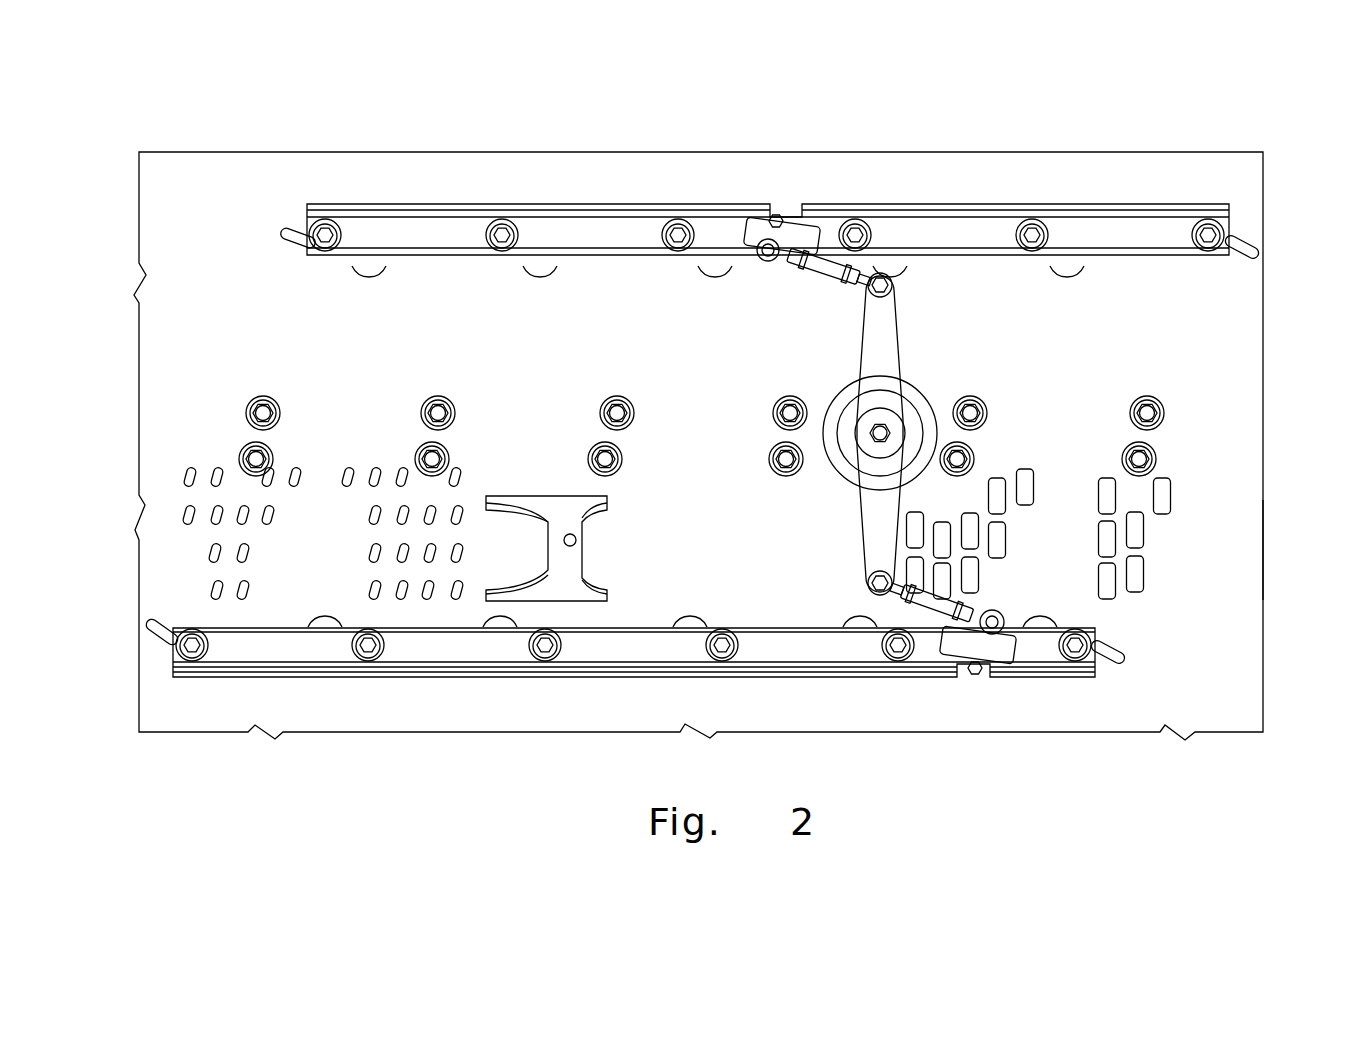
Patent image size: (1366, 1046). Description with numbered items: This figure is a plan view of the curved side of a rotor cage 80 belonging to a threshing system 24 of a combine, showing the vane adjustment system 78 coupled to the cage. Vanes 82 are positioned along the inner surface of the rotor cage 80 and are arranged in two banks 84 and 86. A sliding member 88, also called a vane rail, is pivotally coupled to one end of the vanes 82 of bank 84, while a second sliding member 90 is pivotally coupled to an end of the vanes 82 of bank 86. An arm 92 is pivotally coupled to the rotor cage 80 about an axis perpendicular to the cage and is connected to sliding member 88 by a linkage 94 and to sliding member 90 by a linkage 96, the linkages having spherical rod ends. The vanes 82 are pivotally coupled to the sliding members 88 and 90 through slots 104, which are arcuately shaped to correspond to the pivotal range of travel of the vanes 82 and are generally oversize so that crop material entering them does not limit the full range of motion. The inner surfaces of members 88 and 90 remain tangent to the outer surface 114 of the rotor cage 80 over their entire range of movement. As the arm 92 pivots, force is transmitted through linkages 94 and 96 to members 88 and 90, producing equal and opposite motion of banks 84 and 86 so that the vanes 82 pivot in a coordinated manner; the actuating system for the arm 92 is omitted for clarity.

The threshing system 24 is at (745, 398).
The vane adjustment system 78 is at (1277, 309).
The rotor cage 80 is at (754, 267).
The vanes 82 is at (372, 592).
The bank 84 is at (1274, 250).
The bank 86 is at (1277, 552).
The sliding member 88 is at (985, 256).
The sliding member 90 is at (646, 628).
The arm 92 is at (900, 346).
The linkage 94 is at (835, 264).
The linkage 96 is at (963, 606).
The slots 104 is at (372, 266).
The outer surface 114 is at (555, 393).